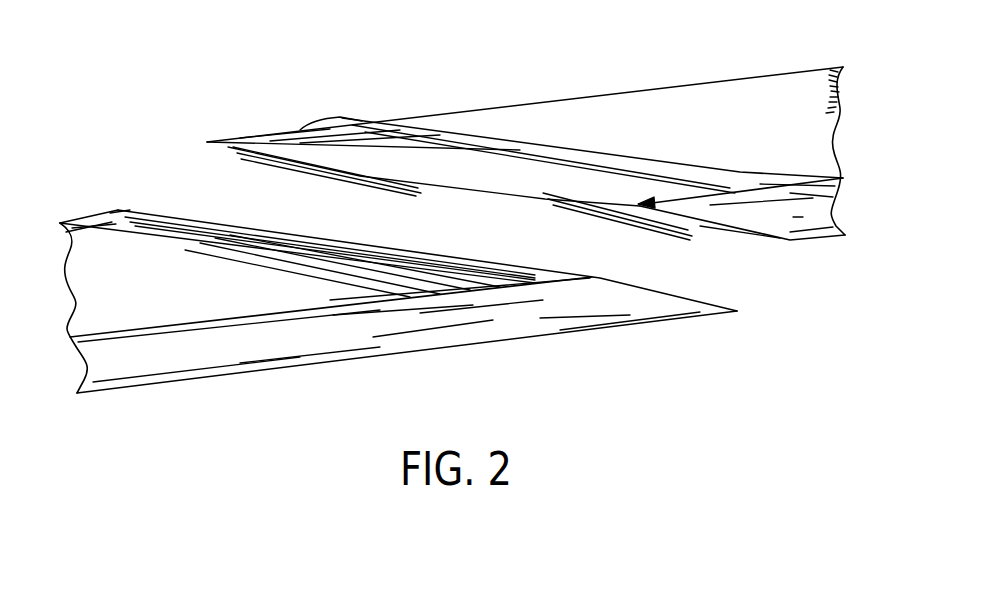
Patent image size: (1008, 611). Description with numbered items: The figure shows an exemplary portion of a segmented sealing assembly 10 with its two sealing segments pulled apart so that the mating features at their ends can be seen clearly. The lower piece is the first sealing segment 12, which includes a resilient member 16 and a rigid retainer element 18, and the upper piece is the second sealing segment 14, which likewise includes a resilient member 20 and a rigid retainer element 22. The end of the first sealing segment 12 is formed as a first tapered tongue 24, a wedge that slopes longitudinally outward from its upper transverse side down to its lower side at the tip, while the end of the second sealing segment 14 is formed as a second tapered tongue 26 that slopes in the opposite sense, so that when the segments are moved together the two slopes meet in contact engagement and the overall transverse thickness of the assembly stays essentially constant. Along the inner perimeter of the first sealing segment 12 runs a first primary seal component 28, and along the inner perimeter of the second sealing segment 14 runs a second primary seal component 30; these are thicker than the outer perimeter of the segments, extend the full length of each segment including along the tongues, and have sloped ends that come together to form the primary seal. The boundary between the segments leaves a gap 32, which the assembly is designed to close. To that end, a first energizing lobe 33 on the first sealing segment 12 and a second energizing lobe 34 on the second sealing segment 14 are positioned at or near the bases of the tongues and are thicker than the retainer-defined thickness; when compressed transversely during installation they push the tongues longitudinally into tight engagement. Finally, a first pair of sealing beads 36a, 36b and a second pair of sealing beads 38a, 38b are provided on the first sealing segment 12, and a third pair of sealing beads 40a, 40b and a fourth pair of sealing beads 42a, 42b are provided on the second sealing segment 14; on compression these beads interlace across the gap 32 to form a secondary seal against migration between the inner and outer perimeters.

The segmented sealing assembly 10 is at (429, 69).
The first sealing segment 12 is at (398, 286).
The second sealing segment 14 is at (511, 186).
The resilient member 16 is at (107, 222).
The rigid retainer element 18 is at (90, 246).
The resilient member 20 is at (313, 142).
The rigid retainer element 22 is at (646, 107).
The first tapered tongue 24 is at (650, 288).
The second tapered tongue 26 is at (224, 148).
The first primary seal component 28 is at (140, 393).
The second primary seal component 30 is at (843, 238).
The gap 32 is at (712, 267).
The first energizing lobe 33 is at (130, 207).
The second energizing lobe 34 is at (331, 118).
The sealing bead 36a is at (480, 255).
The sealing bead 36b is at (457, 252).
The sealing bead 38a is at (190, 210).
The sealing bead 38b is at (220, 215).
The sealing bead 40a is at (567, 196).
The sealing bead 40b is at (540, 198).
The sealing bead 42a is at (268, 157).
The sealing bead 42b is at (300, 160).